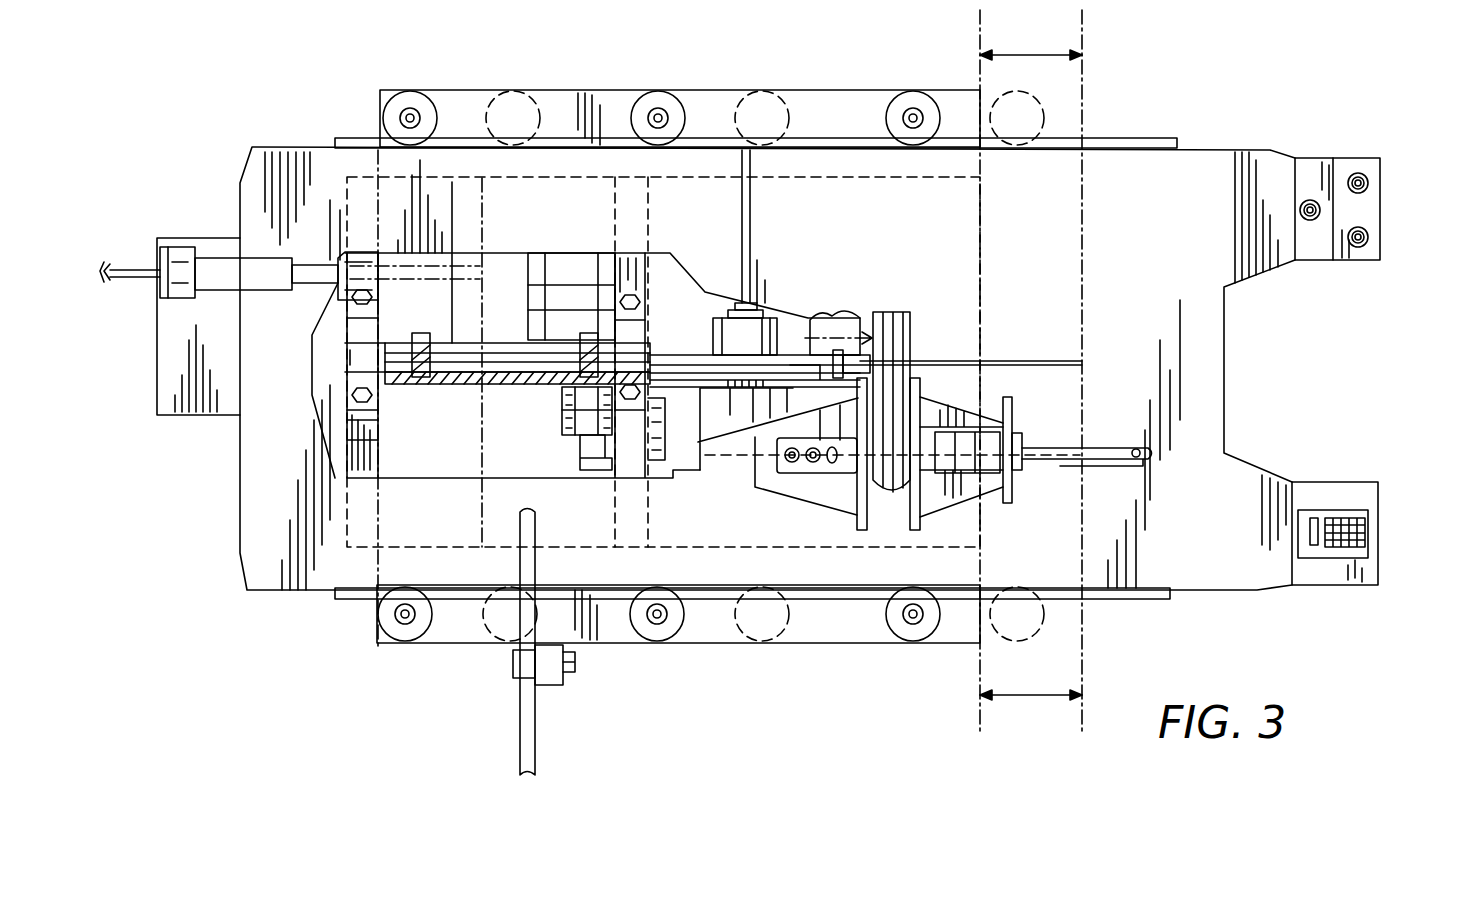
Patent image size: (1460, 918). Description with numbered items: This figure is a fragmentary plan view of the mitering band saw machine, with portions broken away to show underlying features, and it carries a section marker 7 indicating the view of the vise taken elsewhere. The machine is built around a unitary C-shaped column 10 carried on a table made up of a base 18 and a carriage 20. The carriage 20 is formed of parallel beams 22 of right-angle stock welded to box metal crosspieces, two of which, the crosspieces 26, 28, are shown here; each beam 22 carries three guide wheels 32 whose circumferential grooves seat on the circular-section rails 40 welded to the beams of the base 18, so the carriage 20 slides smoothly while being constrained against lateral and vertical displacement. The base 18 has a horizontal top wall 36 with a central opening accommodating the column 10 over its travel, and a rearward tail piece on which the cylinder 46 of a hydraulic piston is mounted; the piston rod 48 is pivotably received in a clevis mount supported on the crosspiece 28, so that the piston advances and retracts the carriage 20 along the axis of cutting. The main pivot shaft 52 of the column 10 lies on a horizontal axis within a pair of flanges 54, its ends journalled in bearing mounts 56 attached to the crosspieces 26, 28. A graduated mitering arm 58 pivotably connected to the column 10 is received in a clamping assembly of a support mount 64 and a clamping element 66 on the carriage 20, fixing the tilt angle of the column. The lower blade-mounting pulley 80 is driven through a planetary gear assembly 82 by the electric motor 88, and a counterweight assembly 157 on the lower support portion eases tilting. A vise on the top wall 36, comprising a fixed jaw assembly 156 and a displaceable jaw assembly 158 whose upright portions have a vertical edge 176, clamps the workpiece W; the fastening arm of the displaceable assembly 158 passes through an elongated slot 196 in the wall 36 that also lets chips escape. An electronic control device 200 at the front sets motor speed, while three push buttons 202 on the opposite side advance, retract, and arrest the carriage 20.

The column 10 is at (440, 400).
The base 18 is at (1240, 391).
The carriage 20 is at (558, 76).
The parallel beams 22 is at (848, 108).
The crosspiece 26 is at (640, 282).
The crosspiece 28 is at (355, 450).
The guide wheels 32 is at (415, 100).
The top wall 36 is at (1210, 162).
The rails 40 is at (832, 150).
The cylinder 46 is at (222, 272).
The rod 48 is at (318, 265).
The main pivot shaft 52 is at (530, 372).
The flanges 54 is at (585, 338).
The bearing mounts 56 is at (355, 358).
The mitering arm 58 is at (525, 728).
The support mount 64 is at (555, 672).
The clamping element 66 is at (520, 668).
The lower blade-mounting pulley 80 is at (685, 360).
The planetary gear assembly 82 is at (700, 445).
The electric motor 88 is at (570, 440).
The fixed jaw assembly 156 is at (846, 512).
The counterweight assembly 157 is at (563, 275).
The displaceable jaw assembly 158 is at (935, 384).
The vertical edge 176 is at (975, 480).
The elongated slot 196 is at (1138, 448).
The electronic control device 200 is at (1335, 556).
The push buttons 202 is at (1368, 237).
The workpiece W is at (890, 322).
The section line 7- 7 is at (741, 445).